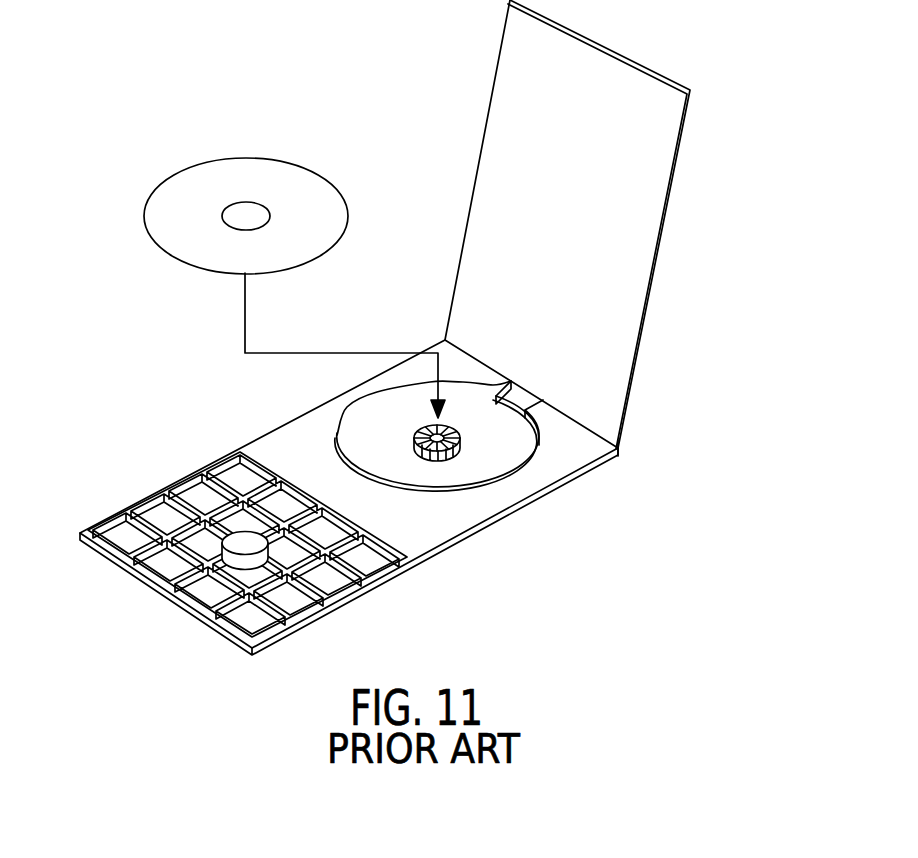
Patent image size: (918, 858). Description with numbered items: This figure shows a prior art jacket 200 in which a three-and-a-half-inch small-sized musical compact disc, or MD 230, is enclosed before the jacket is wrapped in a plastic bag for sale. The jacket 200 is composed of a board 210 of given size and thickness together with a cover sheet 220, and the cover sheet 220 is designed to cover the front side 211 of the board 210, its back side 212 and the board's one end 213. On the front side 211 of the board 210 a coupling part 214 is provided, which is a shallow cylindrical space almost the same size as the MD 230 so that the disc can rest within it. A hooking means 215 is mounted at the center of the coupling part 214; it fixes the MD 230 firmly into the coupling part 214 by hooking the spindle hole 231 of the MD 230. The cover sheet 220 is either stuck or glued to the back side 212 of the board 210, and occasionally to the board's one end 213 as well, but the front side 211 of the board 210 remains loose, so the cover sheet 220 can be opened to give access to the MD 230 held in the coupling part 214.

The jacket 200 is at (398, 337).
The board 210 is at (360, 585).
The front side 211 is at (290, 427).
The back side 212 is at (142, 580).
The one end 213 is at (618, 448).
The coupling part 214 is at (490, 472).
The hooking means 215 is at (437, 452).
The cover sheet 220 is at (480, 105).
The MD 230 is at (195, 265).
The spindle hole 231 is at (247, 202).